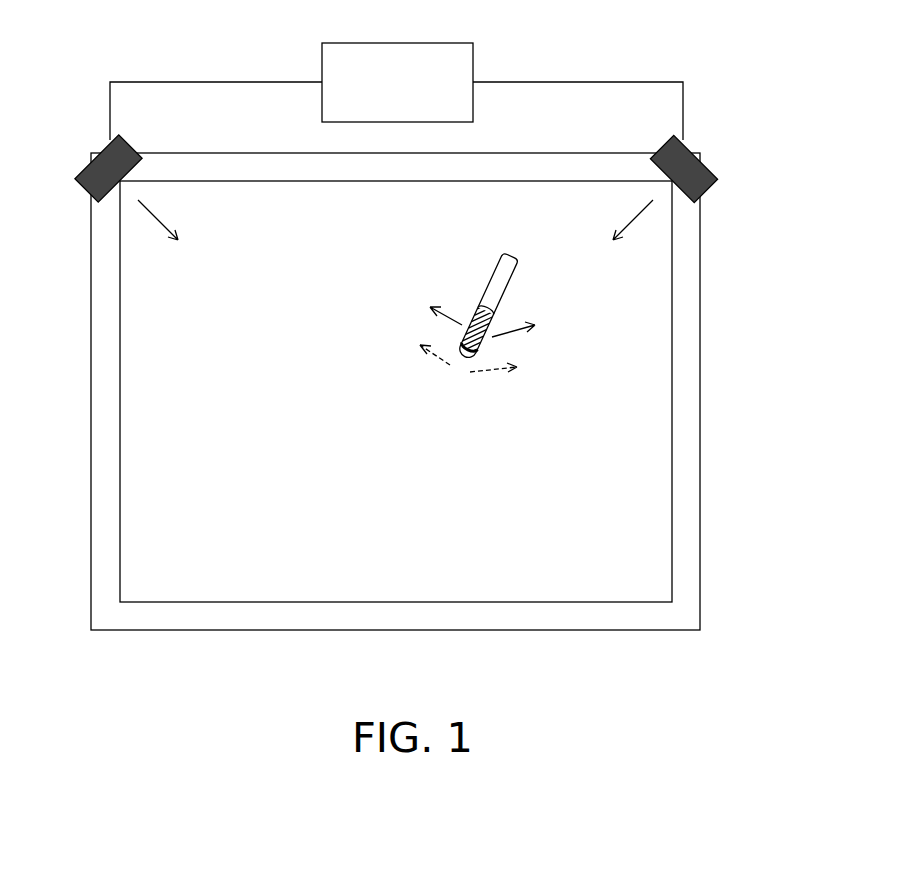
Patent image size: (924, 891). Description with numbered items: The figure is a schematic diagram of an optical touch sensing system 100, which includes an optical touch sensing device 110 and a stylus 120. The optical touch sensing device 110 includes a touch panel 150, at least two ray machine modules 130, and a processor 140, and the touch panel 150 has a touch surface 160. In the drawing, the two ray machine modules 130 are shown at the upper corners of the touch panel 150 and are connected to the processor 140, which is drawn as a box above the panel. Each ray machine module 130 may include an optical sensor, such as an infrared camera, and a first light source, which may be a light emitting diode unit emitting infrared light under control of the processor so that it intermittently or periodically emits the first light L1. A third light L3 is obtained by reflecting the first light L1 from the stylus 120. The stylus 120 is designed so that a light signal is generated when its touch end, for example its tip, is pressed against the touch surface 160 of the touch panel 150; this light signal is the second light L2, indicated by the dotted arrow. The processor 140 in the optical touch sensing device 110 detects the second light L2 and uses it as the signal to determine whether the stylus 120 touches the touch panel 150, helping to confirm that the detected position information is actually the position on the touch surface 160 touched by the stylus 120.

The optical touch sensing system 100 is at (790, 678).
The optical touch sensing device 110 is at (775, 32).
The stylus 120 is at (487, 277).
The ray machine module 130 is at (84, 168).
The processor 140 is at (473, 63).
The touch panel 150 is at (700, 400).
The touch surface 160 is at (672, 333).
The first light L1 is at (395, 238).
The second light L2 is at (472, 355).
The third light L3 is at (486, 311).